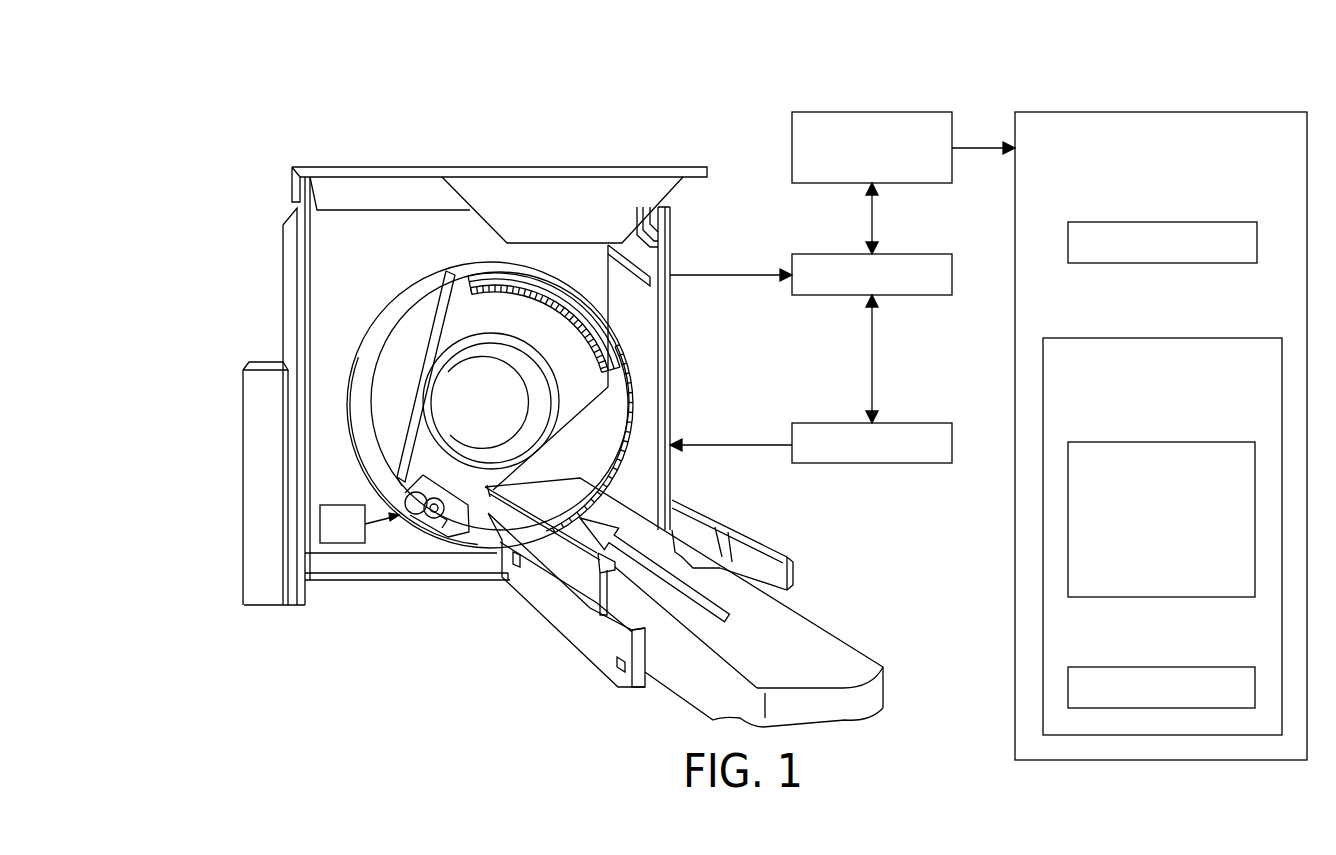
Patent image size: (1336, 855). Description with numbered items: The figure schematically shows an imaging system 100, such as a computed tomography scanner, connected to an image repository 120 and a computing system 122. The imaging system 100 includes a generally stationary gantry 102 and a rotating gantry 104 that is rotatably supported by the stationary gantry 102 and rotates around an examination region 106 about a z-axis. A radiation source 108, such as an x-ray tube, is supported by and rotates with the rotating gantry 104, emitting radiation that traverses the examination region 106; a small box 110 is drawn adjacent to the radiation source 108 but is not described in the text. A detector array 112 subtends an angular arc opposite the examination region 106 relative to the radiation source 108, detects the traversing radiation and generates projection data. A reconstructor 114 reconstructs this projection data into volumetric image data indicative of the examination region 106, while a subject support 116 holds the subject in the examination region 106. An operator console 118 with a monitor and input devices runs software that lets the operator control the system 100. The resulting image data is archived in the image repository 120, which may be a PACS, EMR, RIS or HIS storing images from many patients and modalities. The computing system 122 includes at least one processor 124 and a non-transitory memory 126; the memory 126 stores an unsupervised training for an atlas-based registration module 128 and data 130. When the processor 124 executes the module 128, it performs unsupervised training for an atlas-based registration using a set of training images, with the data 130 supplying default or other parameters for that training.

The imaging system 100 is at (222, 116).
The stationary gantry 102 is at (288, 303).
The rotating gantry 104 is at (447, 317).
The examination region 106 is at (498, 406).
The radiation source 108 is at (422, 532).
The source controller 110 is at (338, 543).
The detector array 112 is at (553, 298).
The reconstructor 114 is at (825, 253).
The subject support 116 is at (834, 647).
The operator console 118 is at (825, 423).
The image repository 120 is at (825, 112).
The computing system 122 is at (1162, 112).
The processor 124 is at (1162, 222).
The memory 126 is at (1162, 338).
The unsupervised training for an atlas-based registration module 128 is at (1158, 442).
The data 130 is at (1160, 667).